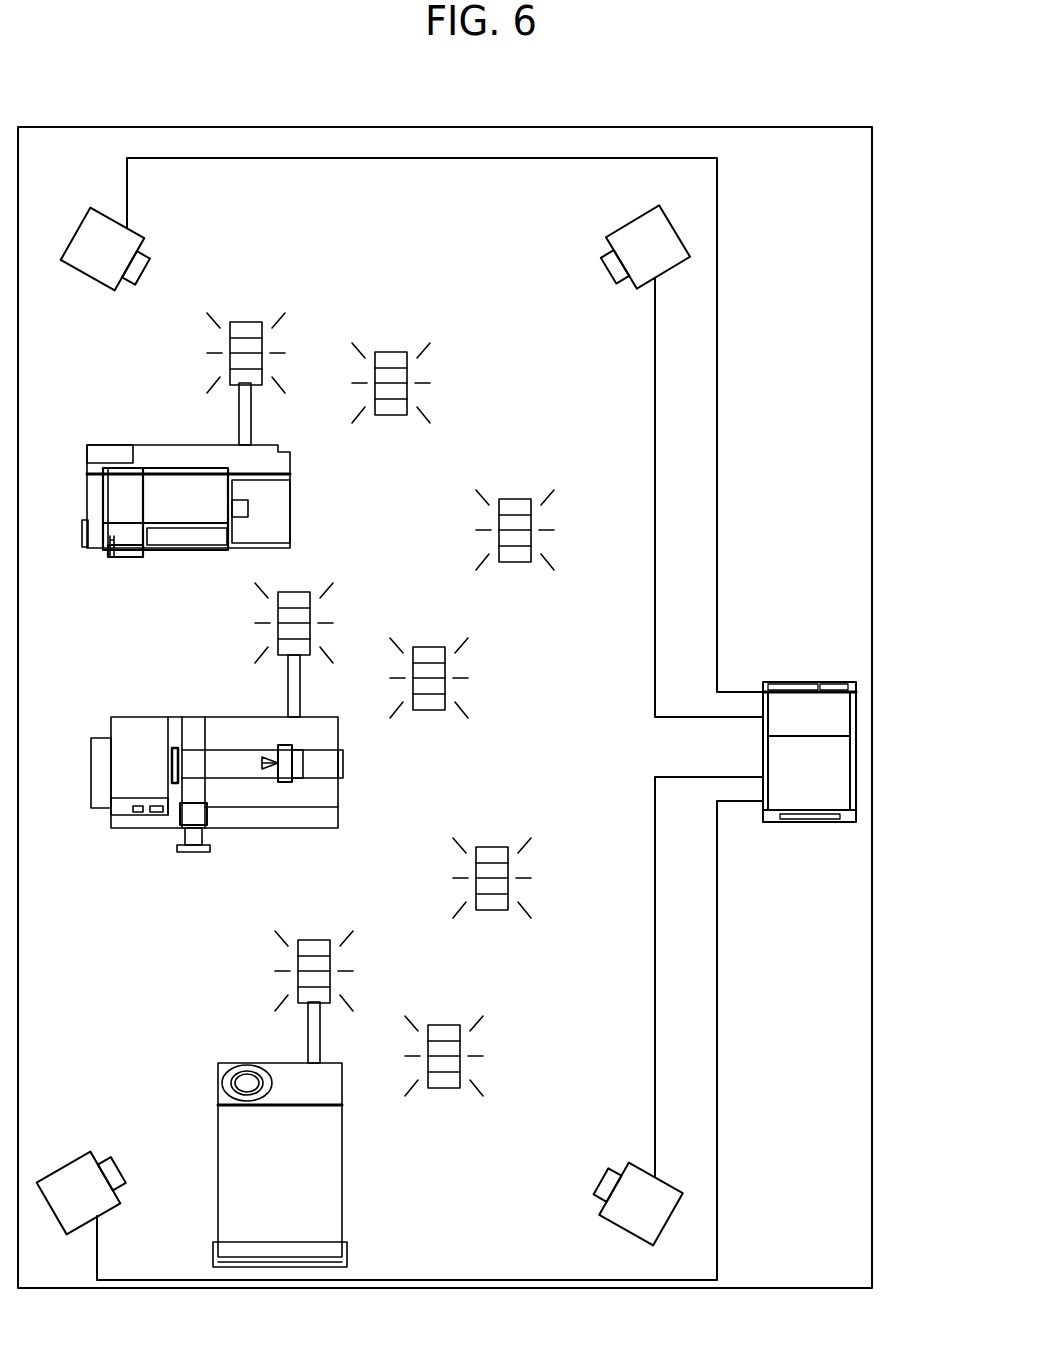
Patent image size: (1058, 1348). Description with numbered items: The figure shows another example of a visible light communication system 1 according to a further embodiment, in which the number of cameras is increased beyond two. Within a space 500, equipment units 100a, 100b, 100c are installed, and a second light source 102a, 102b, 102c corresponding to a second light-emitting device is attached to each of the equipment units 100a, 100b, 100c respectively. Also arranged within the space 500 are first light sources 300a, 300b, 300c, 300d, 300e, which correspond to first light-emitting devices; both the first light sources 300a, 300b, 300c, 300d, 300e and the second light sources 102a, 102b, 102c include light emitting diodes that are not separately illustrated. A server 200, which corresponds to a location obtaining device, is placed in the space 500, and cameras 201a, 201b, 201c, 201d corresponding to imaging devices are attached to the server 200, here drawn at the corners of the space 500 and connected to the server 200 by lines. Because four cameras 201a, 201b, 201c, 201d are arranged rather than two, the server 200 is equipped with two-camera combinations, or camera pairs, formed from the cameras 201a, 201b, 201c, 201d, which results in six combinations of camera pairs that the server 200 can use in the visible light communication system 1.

The visible light communication system 1 is at (737, 244).
The space 500 is at (872, 244).
The server 200 is at (797, 682).
The camera 201a is at (652, 207).
The camera 201b is at (632, 1163).
The camera 201c is at (88, 1152).
The camera 201d is at (100, 207).
The equipment unit 100a is at (115, 445).
The equipment unit 100b is at (150, 717).
The equipment unit 100c is at (218, 1065).
The second light source 102a is at (230, 360).
The second light source 102b is at (278, 628).
The second light source 102c is at (298, 985).
The first light source 300a is at (390, 352).
The first light source 300b is at (520, 499).
The first light source 300c is at (420, 647).
The first light source 300d is at (492, 847).
The first light source 300e is at (448, 1025).